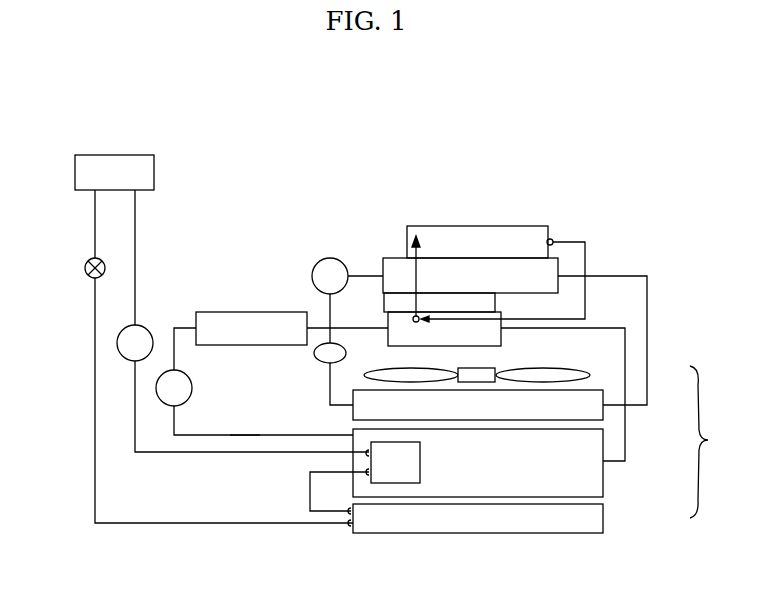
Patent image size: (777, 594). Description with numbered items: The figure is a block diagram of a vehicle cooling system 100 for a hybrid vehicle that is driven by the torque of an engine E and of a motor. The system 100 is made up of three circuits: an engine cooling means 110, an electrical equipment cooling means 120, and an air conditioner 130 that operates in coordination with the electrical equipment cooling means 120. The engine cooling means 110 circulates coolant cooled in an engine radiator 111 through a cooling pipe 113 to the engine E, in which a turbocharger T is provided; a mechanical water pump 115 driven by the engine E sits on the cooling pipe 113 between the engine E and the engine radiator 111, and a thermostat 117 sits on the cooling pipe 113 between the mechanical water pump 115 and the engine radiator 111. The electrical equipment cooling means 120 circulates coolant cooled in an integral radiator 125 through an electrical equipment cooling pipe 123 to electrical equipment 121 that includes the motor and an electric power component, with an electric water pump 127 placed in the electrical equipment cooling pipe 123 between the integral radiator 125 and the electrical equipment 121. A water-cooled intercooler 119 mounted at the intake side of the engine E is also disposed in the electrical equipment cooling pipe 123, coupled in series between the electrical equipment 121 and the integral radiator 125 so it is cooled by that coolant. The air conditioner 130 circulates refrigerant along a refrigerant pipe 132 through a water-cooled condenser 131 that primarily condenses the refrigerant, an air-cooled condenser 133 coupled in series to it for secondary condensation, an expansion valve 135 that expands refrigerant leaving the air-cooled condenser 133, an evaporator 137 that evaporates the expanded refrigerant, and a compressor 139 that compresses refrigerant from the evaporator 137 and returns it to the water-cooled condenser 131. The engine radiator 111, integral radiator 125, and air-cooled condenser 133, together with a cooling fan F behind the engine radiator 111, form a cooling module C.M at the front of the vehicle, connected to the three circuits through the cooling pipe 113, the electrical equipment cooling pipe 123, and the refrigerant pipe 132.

The vehicle cooling system 100 is at (402, 130).
The engine cooling means 110 is at (630, 248).
The engine radiator 111 is at (603, 393).
The cooling pipe 113 is at (648, 297).
The mechanical water pump 115 is at (331, 258).
The thermostat 117 is at (314, 356).
The intercooler 119 is at (501, 342).
The electrical equipment cooling means 120 is at (259, 276).
The electrical equipment 121 is at (217, 312).
The electrical equipment cooling pipe 123 is at (242, 435).
The integral radiator 125 is at (603, 477).
The electric water pump 127 is at (191, 380).
The air conditioner 130 is at (78, 345).
The water-cooled condenser 131 is at (421, 460).
The refrigerant pipe 132 is at (214, 523).
The air-cooled condenser 133 is at (603, 515).
The expansion valve 135 is at (85, 267).
The evaporator 137 is at (110, 155).
The compressor 139 is at (148, 330).
The turbocharger T is at (503, 226).
The engine E is at (384, 258).
The cooling fan F is at (588, 375).
The cooling module C.M is at (714, 442).